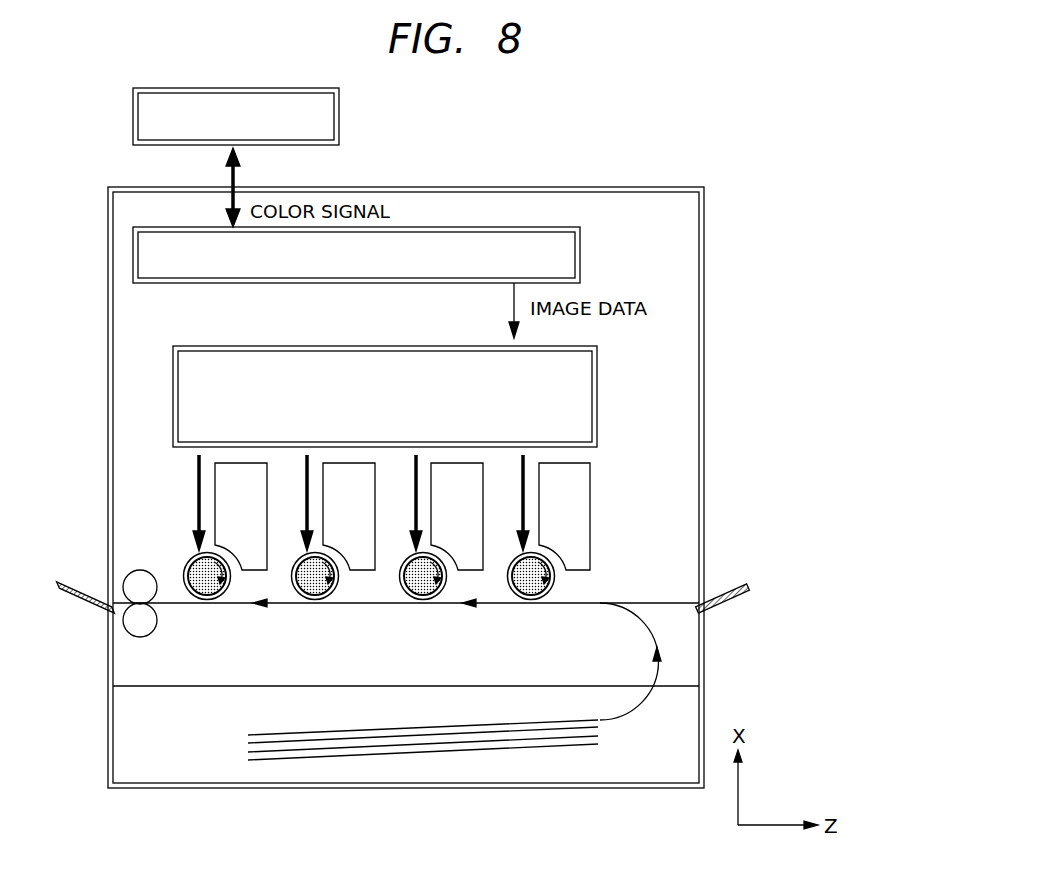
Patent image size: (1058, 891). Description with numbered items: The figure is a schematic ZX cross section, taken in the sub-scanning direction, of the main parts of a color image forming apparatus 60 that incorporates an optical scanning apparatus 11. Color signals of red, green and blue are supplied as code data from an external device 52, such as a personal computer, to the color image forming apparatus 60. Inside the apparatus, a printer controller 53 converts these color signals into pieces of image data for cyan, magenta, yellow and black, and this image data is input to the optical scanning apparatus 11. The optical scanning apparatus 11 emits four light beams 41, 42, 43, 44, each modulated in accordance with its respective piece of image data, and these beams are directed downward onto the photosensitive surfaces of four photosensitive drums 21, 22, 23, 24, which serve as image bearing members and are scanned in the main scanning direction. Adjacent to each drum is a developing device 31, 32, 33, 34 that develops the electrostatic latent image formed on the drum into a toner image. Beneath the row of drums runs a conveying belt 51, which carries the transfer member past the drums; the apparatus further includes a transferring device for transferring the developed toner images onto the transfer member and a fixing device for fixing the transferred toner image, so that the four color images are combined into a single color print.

The optical scanning apparatus 11 is at (172, 372).
The photosensitive drum 21 is at (207, 600).
The photosensitive drum 22 is at (315, 600).
The photosensitive drum 23 is at (423, 600).
The photosensitive drum 24 is at (531, 600).
The developing device 31 is at (245, 473).
The developing device 32 is at (352, 473).
The developing device 33 is at (456, 473).
The developing device 34 is at (563, 473).
The light beam 41 is at (196, 492).
The light beam 42 is at (305, 512).
The light beam 43 is at (413, 511).
The light beam 44 is at (520, 511).
The conveying belt 51 is at (644, 620).
The external device 52 is at (340, 118).
The printer controller 53 is at (581, 252).
The color image forming apparatus 60 is at (641, 186).